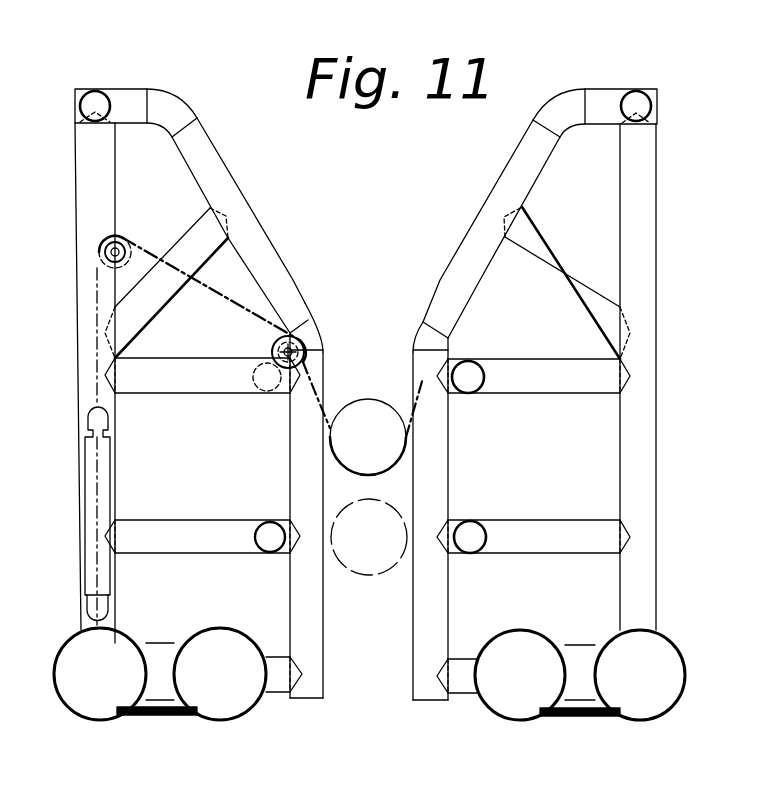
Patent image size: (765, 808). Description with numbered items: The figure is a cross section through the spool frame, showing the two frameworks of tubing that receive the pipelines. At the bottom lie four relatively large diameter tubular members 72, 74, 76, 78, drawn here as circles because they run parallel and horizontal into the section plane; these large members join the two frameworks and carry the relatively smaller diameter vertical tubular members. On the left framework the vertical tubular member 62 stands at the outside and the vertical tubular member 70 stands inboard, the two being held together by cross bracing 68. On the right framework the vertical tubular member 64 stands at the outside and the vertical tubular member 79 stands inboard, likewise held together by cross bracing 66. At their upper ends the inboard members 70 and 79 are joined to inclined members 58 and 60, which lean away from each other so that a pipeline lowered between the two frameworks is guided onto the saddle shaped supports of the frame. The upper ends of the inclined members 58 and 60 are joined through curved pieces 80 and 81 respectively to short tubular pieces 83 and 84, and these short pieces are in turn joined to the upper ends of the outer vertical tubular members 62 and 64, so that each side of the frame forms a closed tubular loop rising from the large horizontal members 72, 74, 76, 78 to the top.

The inclined member 58 is at (195, 163).
The inclined member 60 is at (517, 165).
The vertical tubular member 62 is at (93, 358).
The vertical tubular member 64 is at (640, 353).
The cross bracing 66 is at (544, 385).
The cross bracing 68 is at (182, 383).
The vertical tubular member 70 is at (300, 470).
The tubular member 72 is at (66, 708).
The tubular member 74 is at (253, 707).
The tubular member 76 is at (488, 708).
The tubular member 78 is at (672, 708).
The vertical tubular member 79 is at (433, 458).
The curved piece 80 is at (170, 108).
The curved piece 81 is at (560, 98).
The short tubular piece 83 is at (127, 100).
The short tubular piece 84 is at (607, 98).